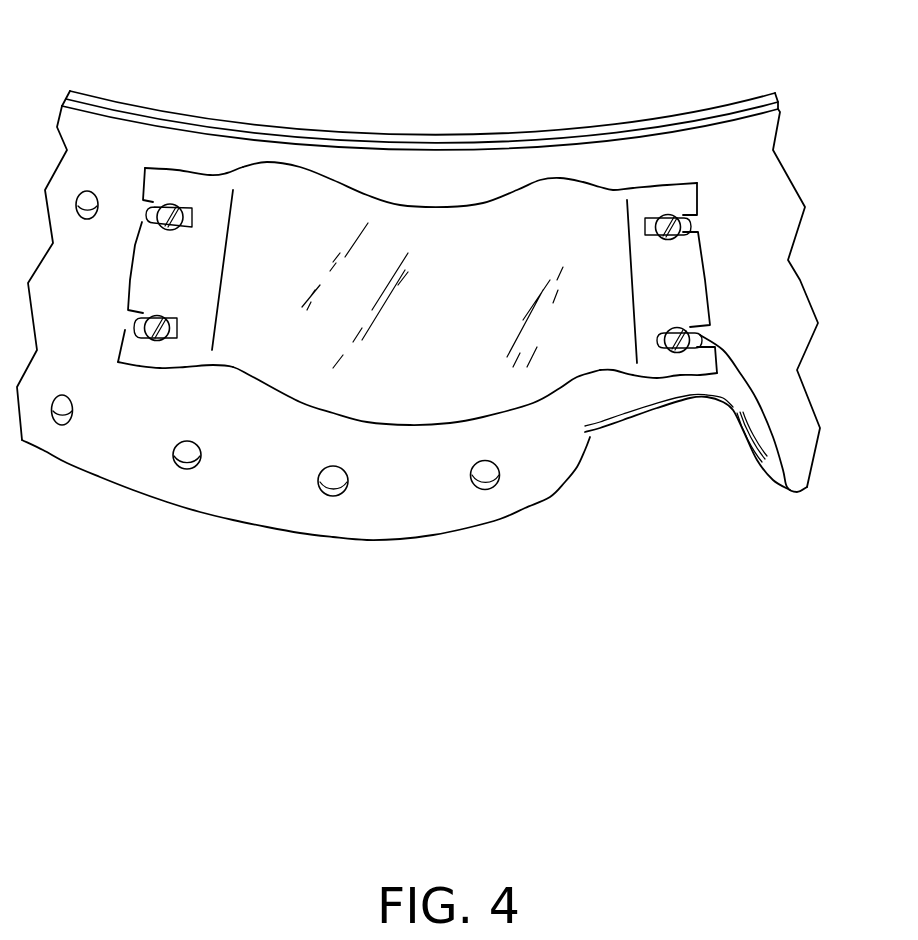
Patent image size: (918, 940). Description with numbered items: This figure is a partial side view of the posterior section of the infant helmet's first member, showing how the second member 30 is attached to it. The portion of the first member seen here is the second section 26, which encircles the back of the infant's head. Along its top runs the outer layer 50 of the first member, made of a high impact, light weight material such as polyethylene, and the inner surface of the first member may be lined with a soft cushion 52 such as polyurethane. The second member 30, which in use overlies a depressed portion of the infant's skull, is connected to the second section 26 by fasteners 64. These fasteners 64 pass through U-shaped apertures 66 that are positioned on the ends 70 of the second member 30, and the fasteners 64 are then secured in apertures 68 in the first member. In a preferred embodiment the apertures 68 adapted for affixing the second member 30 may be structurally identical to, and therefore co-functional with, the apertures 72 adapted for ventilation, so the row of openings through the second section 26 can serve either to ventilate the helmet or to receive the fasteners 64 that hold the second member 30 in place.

The second section 26 is at (415, 188).
The second member 30 is at (417, 328).
The outer layer 50 is at (158, 128).
The soft cushion 52 is at (393, 137).
The fasteners 64 is at (672, 353).
The U-shaped apertures 66 is at (655, 342).
The apertures 68 is at (787, 475).
The ends 70 is at (417, 272).
The apertures adapted for ventilation 72 is at (60, 427).